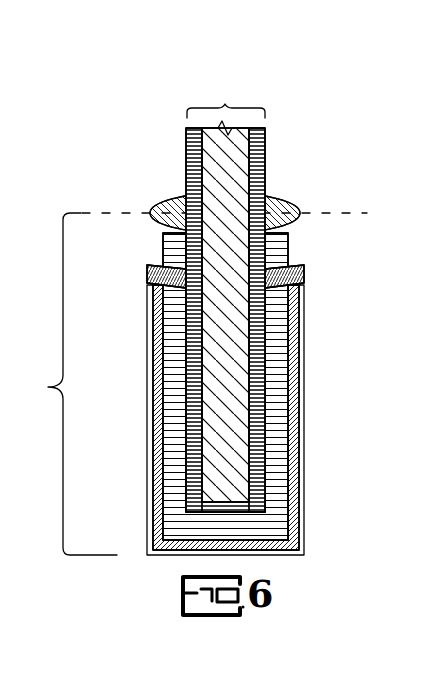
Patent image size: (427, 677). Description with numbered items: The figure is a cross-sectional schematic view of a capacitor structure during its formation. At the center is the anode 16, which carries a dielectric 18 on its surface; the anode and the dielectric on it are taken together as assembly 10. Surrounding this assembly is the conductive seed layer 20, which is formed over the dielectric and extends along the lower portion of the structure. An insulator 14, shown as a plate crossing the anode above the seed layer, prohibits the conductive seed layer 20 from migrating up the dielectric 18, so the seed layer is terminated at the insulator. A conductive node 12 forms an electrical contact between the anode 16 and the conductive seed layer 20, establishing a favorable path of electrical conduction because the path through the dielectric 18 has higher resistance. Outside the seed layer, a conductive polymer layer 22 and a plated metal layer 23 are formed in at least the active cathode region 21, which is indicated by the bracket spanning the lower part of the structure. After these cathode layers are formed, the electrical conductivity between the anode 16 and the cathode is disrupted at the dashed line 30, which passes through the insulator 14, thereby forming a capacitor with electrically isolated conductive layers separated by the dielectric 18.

The anode with dielectric 10 is at (225, 104).
The conductive node 12 is at (147, 268).
The insulator 14 is at (180, 207).
The anode 16 is at (233, 170).
The dielectric 18 is at (192, 138).
The conductive seed layer 20 is at (285, 342).
The active cathode region 21 is at (72, 384).
The conductive polymer layer 22 is at (293, 398).
The plated metal layer 23 is at (304, 499).
The line 30 is at (343, 212).